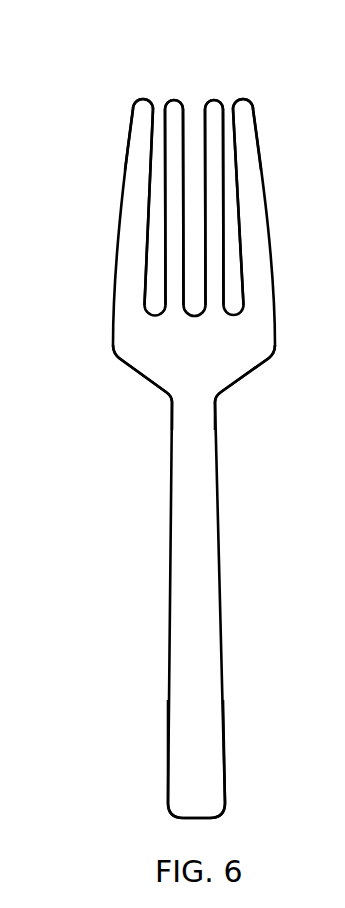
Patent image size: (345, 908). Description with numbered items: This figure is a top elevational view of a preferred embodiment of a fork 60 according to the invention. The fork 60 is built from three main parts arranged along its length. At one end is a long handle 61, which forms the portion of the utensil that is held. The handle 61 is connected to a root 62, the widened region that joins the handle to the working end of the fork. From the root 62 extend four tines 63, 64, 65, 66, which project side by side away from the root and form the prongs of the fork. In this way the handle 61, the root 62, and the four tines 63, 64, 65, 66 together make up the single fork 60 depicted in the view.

The fork 60 is at (80, 545).
The handle 61 is at (190, 725).
The root 62 is at (157, 362).
The tine 63 is at (142, 97).
The tine 64 is at (180, 100).
The tine 65 is at (213, 99).
The tine 66 is at (252, 100).